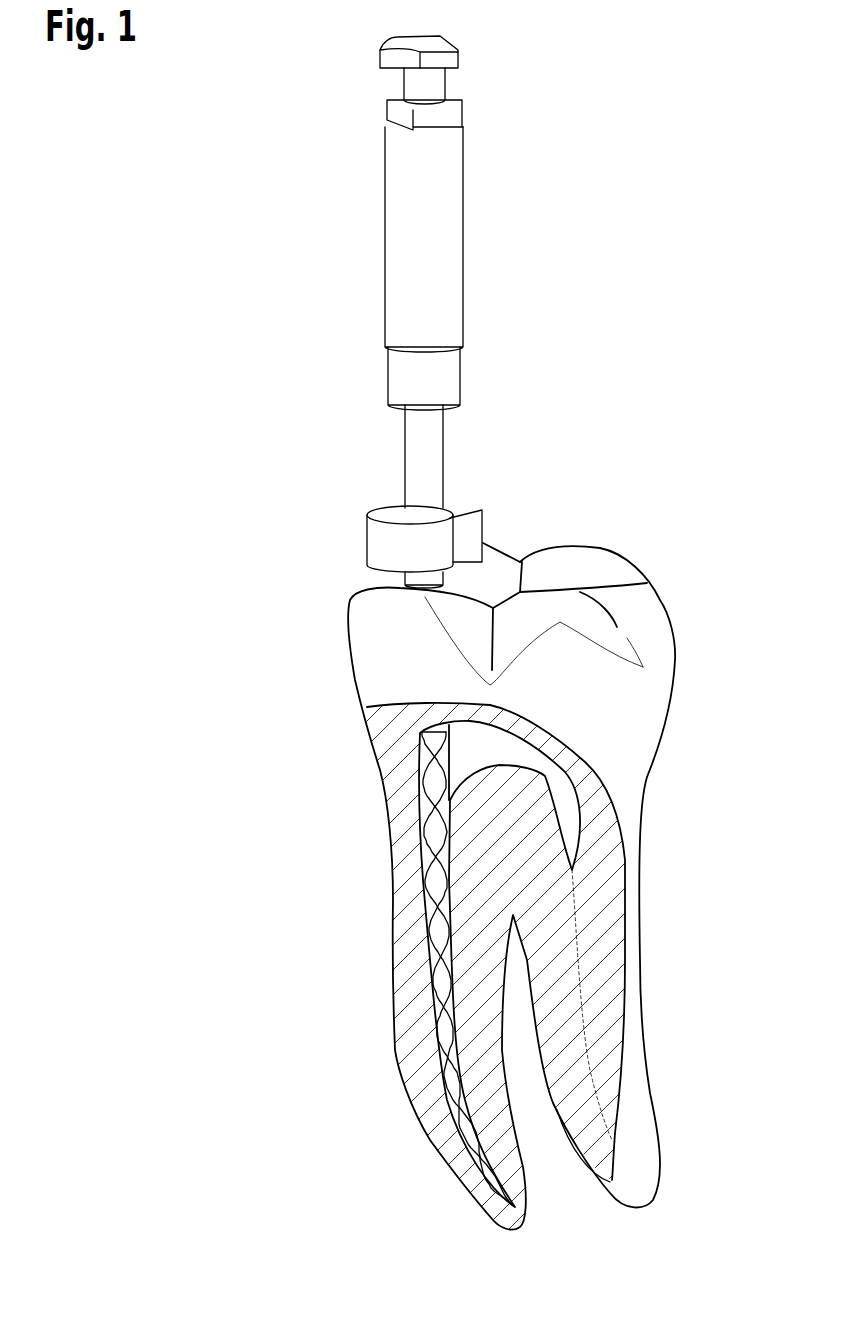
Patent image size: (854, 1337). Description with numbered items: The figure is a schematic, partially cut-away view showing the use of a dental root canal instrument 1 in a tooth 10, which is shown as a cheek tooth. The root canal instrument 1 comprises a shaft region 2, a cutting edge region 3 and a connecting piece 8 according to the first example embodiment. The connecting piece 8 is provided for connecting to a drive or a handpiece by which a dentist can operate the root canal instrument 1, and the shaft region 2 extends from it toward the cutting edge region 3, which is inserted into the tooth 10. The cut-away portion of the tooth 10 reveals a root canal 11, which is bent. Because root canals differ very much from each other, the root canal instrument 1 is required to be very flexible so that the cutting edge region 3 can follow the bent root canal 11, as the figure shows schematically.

The dental root canal instrument 1 is at (368, 425).
The shaft region 2 is at (430, 452).
The cutting edge region 3 is at (435, 902).
The connecting piece 8 is at (443, 295).
The tooth 10 is at (660, 648).
The root canal 11 is at (430, 994).